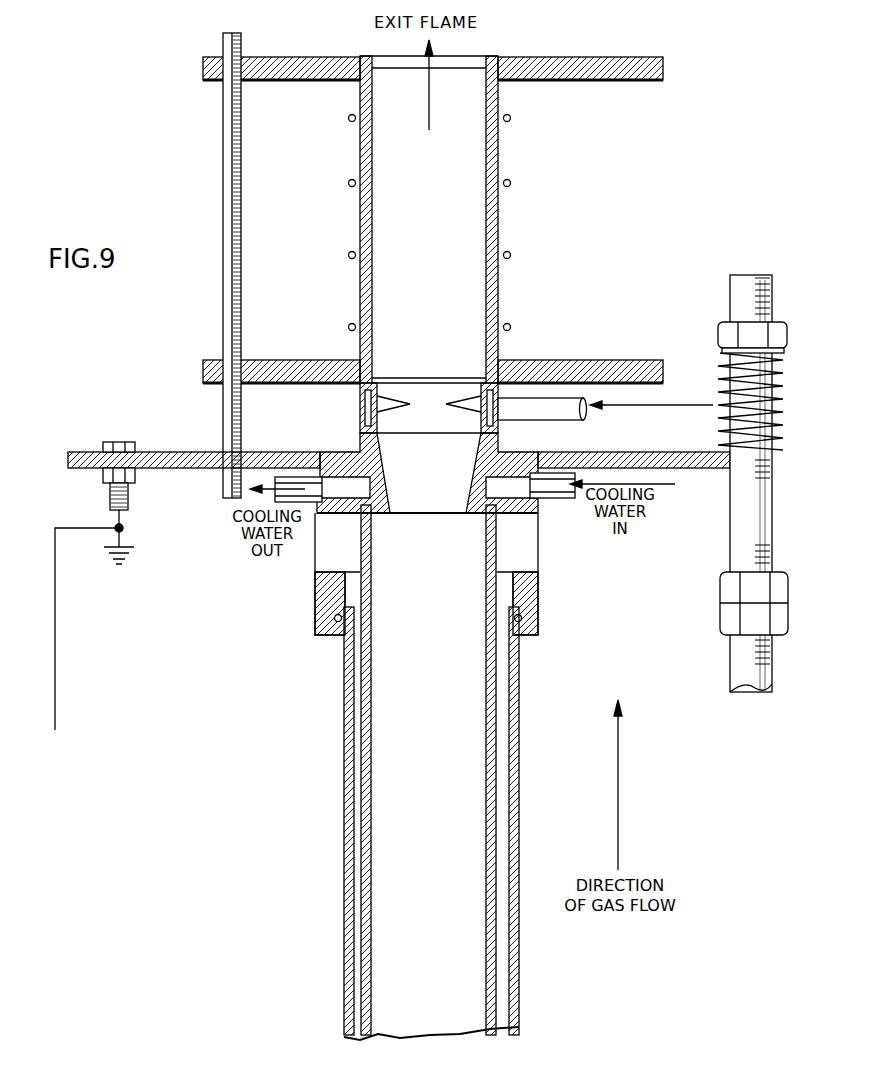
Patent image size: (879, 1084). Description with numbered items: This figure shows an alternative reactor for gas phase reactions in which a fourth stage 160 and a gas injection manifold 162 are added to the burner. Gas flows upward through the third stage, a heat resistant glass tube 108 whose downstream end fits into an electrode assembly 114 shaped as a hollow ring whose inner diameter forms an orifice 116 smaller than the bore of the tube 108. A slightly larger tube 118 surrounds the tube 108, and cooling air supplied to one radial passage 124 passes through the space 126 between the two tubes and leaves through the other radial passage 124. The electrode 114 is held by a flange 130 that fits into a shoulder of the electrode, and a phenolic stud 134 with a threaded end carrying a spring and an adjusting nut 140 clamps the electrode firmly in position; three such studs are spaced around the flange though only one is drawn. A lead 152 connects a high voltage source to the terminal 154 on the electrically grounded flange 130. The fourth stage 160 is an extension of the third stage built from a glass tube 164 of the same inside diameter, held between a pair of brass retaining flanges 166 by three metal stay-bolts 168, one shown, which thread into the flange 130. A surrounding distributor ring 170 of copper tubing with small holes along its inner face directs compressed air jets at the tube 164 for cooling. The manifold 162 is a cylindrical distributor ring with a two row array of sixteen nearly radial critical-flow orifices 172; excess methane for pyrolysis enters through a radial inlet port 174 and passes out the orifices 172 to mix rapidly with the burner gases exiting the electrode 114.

The glass tube 108 is at (485, 670).
The electrode assembly 114 is at (539, 596).
The orifice 116 is at (430, 516).
The Vycor tube 118 is at (343, 673).
The radial passage 124 is at (330, 556).
The space 126 is at (519, 681).
The flange 130 is at (186, 460).
The phenolic stud 134 is at (738, 533).
The adjusting nut 140 is at (727, 333).
The lead 152 is at (57, 625).
The terminal 154 is at (130, 494).
The fourth stage 160 is at (433, 231).
The gas injection manifold 162 is at (357, 402).
The Vycor glass tube 164 is at (500, 255).
The brass retaining flanges 166 is at (270, 68).
The metal stay-bolts 168 is at (233, 152).
The distributor ring 170 is at (510, 122).
The critical-flow orifices 172 is at (429, 404).
The radial inlet port 174 is at (528, 408).